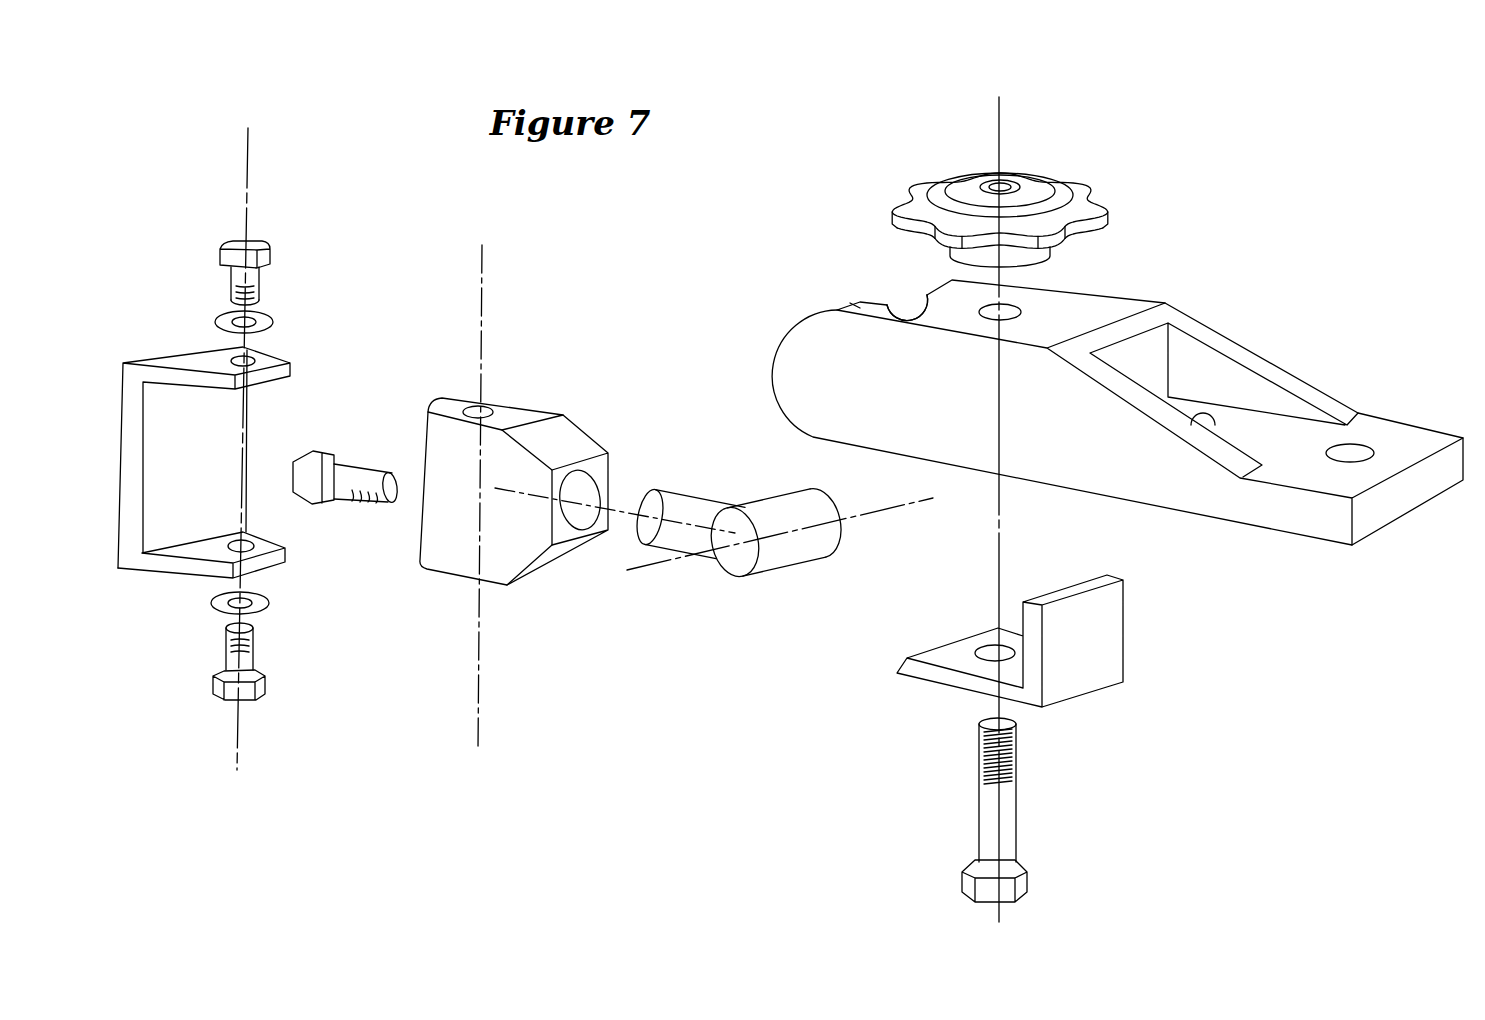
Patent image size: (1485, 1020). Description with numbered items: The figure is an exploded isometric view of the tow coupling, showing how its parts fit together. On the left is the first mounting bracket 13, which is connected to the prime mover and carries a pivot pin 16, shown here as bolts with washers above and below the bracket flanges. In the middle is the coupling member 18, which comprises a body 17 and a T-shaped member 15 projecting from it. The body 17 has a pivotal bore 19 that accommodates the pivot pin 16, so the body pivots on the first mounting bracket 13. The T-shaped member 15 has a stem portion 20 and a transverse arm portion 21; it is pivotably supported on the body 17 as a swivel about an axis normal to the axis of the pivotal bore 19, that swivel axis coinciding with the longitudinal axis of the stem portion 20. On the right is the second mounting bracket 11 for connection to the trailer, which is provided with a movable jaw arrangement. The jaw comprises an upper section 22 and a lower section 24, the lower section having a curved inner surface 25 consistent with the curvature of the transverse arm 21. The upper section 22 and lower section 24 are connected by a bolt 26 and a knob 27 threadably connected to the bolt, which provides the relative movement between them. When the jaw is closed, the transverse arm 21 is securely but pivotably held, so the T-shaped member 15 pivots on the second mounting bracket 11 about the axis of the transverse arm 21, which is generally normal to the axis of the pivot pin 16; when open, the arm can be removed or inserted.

The second mounting bracket 11 is at (1117, 378).
The first mounting bracket 13 is at (135, 562).
The T-shaped member 15 is at (771, 567).
The pivot pin 16 is at (267, 256).
The body 17 is at (503, 567).
The coupling member 18 is at (592, 478).
The pivotal bore 19 is at (483, 410).
The stem portion 20 is at (672, 518).
The transverse arm portion 21 is at (737, 567).
The upper section 22 is at (860, 306).
The lower section 24 is at (1107, 655).
The curved inner surface 25 is at (1024, 641).
The bolt 26 is at (1003, 842).
The knob 27 is at (1095, 202).